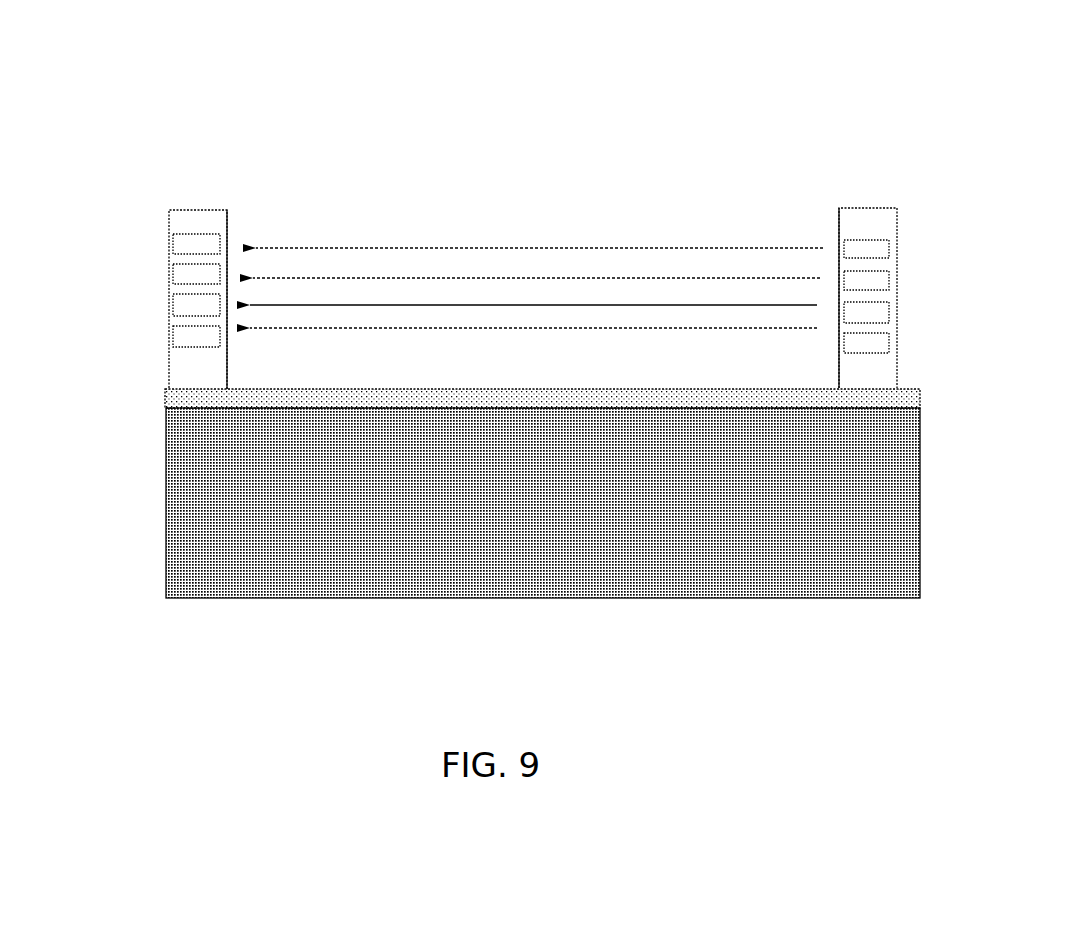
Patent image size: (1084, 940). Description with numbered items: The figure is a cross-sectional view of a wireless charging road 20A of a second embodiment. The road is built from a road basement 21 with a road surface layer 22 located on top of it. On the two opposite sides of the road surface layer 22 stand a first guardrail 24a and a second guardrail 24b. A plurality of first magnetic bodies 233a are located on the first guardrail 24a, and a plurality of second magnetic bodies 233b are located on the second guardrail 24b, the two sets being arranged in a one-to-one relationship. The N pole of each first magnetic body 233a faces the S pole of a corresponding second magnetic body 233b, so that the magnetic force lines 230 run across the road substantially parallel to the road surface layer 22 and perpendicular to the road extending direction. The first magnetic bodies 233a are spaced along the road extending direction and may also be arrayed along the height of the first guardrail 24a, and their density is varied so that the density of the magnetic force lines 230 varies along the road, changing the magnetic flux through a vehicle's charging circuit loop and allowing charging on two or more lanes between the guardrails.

The wireless charging road 20A is at (528, 82).
The road basement 21 is at (188, 507).
The road surface layer 22 is at (190, 403).
The first guardrail 24a is at (858, 213).
The second guardrail 24b is at (190, 218).
The first magnetic bodies 233a is at (848, 242).
The second magnetic bodies 233b is at (219, 244).
The magnetic force lines 230 is at (491, 248).